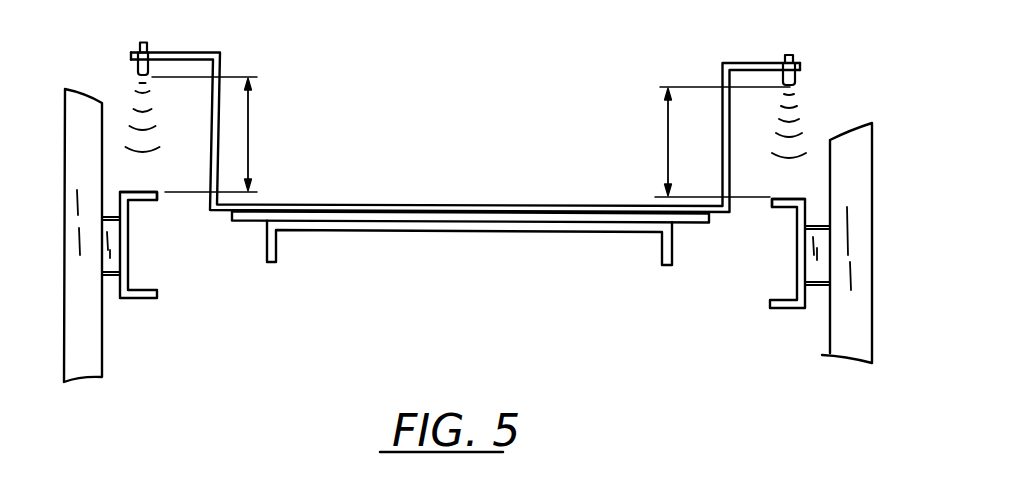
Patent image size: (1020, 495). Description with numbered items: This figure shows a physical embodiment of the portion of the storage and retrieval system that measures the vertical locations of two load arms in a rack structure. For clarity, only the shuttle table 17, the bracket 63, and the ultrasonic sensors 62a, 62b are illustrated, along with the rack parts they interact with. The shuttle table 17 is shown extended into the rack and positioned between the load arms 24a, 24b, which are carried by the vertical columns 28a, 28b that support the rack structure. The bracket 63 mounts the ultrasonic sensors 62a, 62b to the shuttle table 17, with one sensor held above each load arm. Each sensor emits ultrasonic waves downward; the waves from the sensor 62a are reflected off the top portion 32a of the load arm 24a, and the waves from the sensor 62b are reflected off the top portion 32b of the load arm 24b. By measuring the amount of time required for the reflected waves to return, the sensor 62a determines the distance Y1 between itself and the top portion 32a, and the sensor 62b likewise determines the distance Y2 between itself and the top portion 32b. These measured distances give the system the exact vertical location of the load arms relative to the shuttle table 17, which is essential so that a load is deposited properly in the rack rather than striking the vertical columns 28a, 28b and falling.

The shuttle table 17 is at (470, 219).
The load arm 24a is at (143, 298).
The load arm 24b is at (784, 310).
The vertical column 28a is at (93, 371).
The vertical column 28b is at (841, 333).
The top portion 32a is at (150, 192).
The top portion 32b is at (787, 197).
The ultrasonic sensor 62a is at (143, 43).
The ultrasonic sensor 62b is at (800, 58).
The bracket 63 is at (462, 205).
The distance Y1 is at (209, 134).
The distance Y2 is at (722, 142).